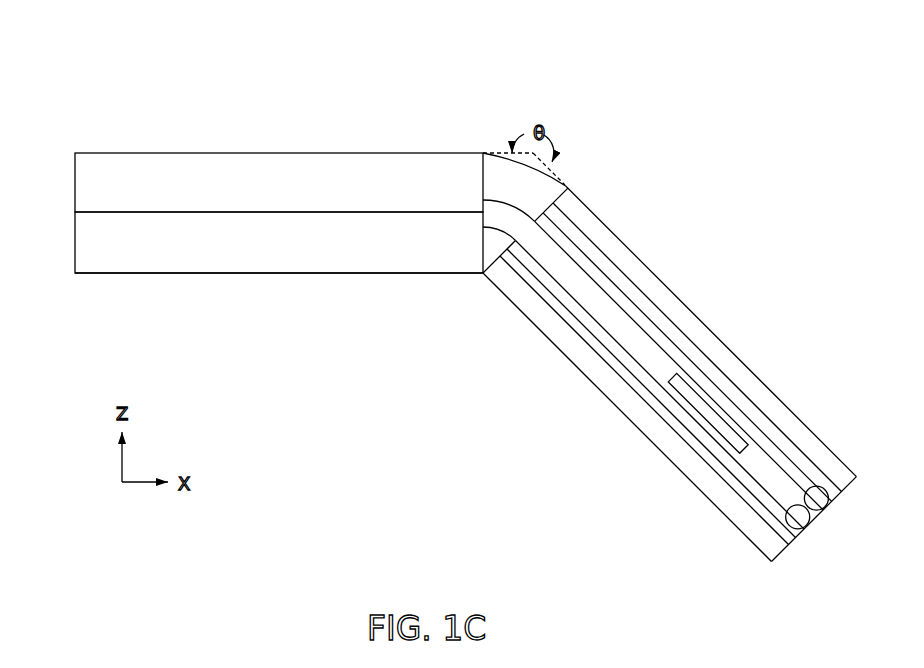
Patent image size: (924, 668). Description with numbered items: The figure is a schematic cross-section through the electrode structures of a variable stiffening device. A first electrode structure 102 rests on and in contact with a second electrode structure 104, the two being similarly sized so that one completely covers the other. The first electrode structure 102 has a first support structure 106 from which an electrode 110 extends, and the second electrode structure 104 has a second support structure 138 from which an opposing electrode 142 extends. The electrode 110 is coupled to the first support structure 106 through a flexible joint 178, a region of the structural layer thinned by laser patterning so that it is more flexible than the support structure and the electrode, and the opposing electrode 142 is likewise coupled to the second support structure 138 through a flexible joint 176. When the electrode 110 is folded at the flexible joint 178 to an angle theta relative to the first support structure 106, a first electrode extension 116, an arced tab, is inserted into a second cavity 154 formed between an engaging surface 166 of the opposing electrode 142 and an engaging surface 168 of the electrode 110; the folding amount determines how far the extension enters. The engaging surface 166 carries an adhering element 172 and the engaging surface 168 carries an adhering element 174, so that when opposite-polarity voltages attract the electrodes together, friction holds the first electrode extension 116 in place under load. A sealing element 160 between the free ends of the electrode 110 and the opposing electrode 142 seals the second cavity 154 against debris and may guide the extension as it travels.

The first electrode structure 102 is at (246, 169).
The second electrode structure 104 is at (279, 318).
The first support structure 106 is at (83, 185).
The second support structure 138 is at (83, 240).
The electrode 110 is at (783, 412).
The first electrode extension 116 is at (707, 400).
The opposing electrode 142 is at (693, 472).
The second cavity 154 is at (577, 260).
The sealing element 160 is at (795, 527).
The engaging surface 166 is at (587, 313).
The engaging surface 168 is at (614, 296).
The adhering element 172 is at (768, 516).
The adhering element 174 is at (818, 462).
The flexible joint 176 is at (493, 243).
The flexible joint 178 is at (548, 179).